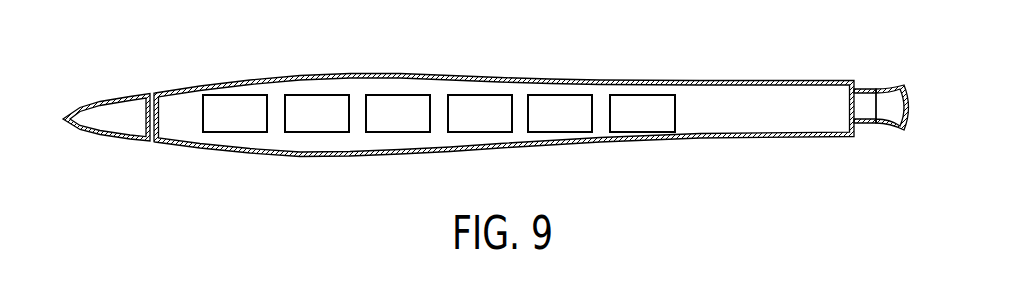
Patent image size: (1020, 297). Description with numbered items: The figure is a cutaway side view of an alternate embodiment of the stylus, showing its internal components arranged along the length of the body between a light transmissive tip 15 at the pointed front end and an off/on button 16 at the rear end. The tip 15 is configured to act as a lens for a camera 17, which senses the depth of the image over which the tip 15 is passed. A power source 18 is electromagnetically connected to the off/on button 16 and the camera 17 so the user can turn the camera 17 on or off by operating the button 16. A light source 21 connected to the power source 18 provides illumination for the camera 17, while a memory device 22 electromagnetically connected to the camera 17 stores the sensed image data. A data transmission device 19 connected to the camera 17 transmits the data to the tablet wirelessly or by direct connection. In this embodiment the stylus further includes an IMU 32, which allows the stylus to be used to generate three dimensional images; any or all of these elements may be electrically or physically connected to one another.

The light transmissive tip 15 is at (130, 112).
The off/on button 16 is at (889, 101).
The camera 17 is at (246, 126).
The power source 18 is at (328, 126).
The light source 21 is at (409, 126).
The memory device 22 is at (491, 126).
The data transmission device 19 is at (571, 126).
The IMU 32 is at (653, 126).